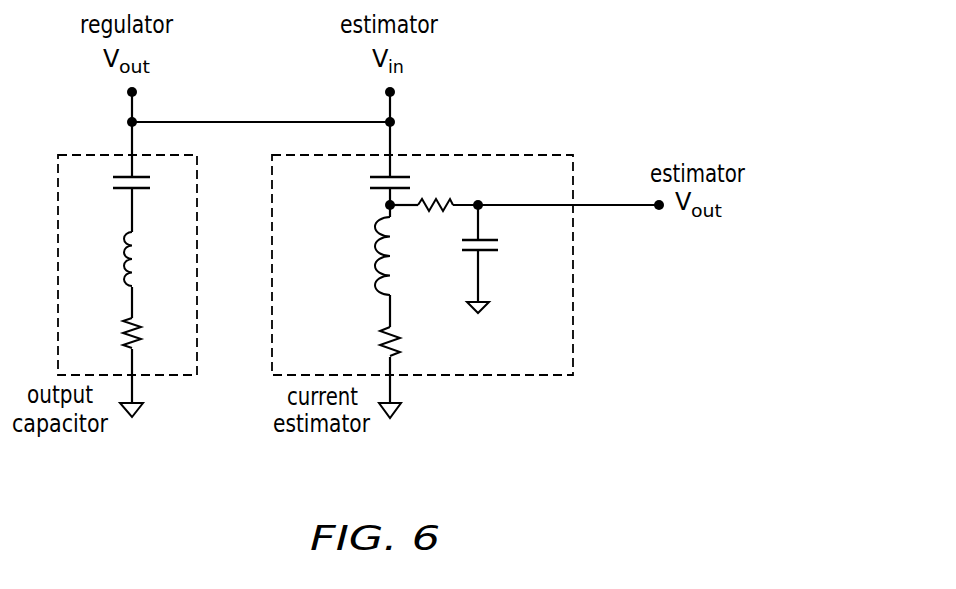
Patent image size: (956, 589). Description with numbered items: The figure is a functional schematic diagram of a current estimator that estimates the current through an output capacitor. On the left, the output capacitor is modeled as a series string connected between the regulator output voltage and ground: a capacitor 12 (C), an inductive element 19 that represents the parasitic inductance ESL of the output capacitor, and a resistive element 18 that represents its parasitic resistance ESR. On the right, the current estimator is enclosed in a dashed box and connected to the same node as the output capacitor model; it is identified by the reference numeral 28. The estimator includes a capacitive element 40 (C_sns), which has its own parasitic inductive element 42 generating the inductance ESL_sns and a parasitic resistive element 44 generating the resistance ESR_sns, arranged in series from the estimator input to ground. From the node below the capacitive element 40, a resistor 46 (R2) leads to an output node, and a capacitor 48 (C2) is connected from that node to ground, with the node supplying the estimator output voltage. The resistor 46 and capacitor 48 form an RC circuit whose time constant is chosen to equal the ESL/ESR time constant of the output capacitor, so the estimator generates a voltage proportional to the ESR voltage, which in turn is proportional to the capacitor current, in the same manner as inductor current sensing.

The capacitor 12 is at (142, 190).
The inductive element 19 is at (133, 276).
The resistive element 18 is at (136, 325).
The current estimator 28 is at (573, 331).
The capacitive element 40 is at (419, 170).
The parasitic inductive element 42 is at (392, 258).
The parasitic resistive element 44 is at (394, 326).
The resistor 46 is at (446, 199).
The capacitor 48 is at (490, 253).